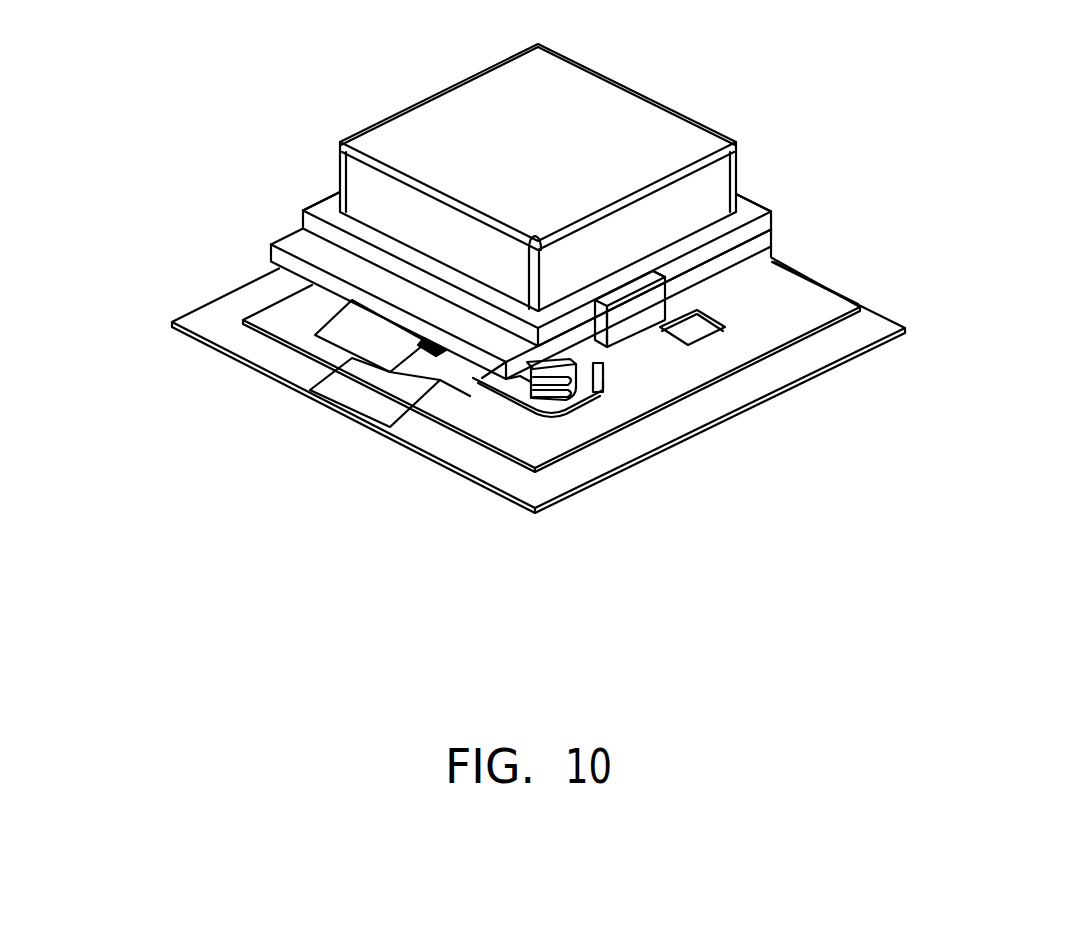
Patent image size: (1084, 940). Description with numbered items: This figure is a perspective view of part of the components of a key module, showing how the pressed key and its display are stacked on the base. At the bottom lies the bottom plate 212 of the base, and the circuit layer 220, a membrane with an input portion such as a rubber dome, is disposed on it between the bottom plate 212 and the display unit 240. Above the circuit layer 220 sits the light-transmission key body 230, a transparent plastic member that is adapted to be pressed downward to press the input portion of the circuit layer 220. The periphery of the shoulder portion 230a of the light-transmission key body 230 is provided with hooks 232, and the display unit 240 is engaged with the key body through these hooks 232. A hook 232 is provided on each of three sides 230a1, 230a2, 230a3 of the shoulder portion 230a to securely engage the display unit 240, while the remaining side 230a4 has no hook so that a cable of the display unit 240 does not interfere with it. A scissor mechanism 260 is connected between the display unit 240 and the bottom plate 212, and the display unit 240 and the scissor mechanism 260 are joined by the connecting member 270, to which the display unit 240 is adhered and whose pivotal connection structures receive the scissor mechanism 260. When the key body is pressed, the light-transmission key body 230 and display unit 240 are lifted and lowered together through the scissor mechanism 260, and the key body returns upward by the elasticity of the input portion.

The bottom plate 212 is at (840, 337).
The circuit layer 220 is at (797, 303).
The light-transmission key body 230 is at (575, 110).
The shoulder portion 230a is at (477, 265).
The first side of the shoulder portion 230a1 is at (692, 257).
The second side of the shoulder portion 230a2 is at (748, 195).
The third side of the shoulder portion 230a3 is at (320, 195).
The fourth side of the shoulder portion 230a4 is at (400, 268).
The hook 232 is at (640, 322).
The display unit 240 is at (317, 255).
The scissor mechanism 260 is at (572, 358).
The connecting member 270 is at (767, 257).